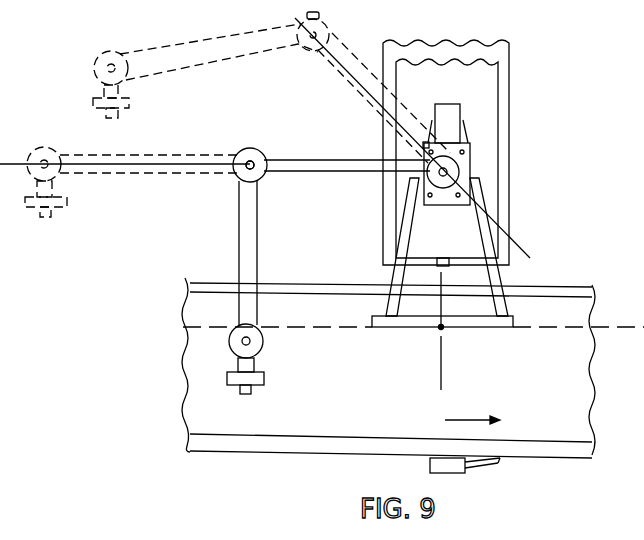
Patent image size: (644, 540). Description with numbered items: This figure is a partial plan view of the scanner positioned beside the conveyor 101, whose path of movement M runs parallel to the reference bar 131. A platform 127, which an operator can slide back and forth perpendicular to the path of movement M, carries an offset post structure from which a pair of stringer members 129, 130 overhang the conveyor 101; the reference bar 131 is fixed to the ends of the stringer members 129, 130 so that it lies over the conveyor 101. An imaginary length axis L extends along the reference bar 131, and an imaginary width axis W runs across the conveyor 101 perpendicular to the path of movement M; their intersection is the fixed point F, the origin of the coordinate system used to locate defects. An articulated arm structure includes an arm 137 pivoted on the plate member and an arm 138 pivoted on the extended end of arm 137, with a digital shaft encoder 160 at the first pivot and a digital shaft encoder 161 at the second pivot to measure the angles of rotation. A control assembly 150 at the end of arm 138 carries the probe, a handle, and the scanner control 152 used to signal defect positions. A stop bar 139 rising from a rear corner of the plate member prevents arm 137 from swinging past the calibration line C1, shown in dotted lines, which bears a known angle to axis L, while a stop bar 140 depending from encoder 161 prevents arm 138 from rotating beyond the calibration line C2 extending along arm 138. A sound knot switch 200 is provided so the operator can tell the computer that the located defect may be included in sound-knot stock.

The conveyor 101 is at (527, 395).
The platform 127 is at (497, 136).
The stringer member 129 is at (405, 233).
The stringer member 130 is at (471, 229).
The reference bar 131 is at (372, 318).
The arm member 137 is at (293, 160).
The arm member 138 is at (258, 270).
The stop bar 139 is at (425, 145).
The stop bar 140 is at (244, 150).
The control assembly 150 is at (263, 341).
The scanner control 152 is at (266, 381).
The digital shaft encoder 160 is at (466, 170).
The digital shaft encoder 161 is at (263, 180).
The sound knot switch 200 is at (447, 474).
The fixed point F is at (442, 330).
The imaginary width axis W is at (443, 368).
The path of movement M is at (480, 421).
The imaginary length axis L is at (627, 330).
The calibration line C1 is at (330, 55).
The calibration line C2 is at (157, 163).